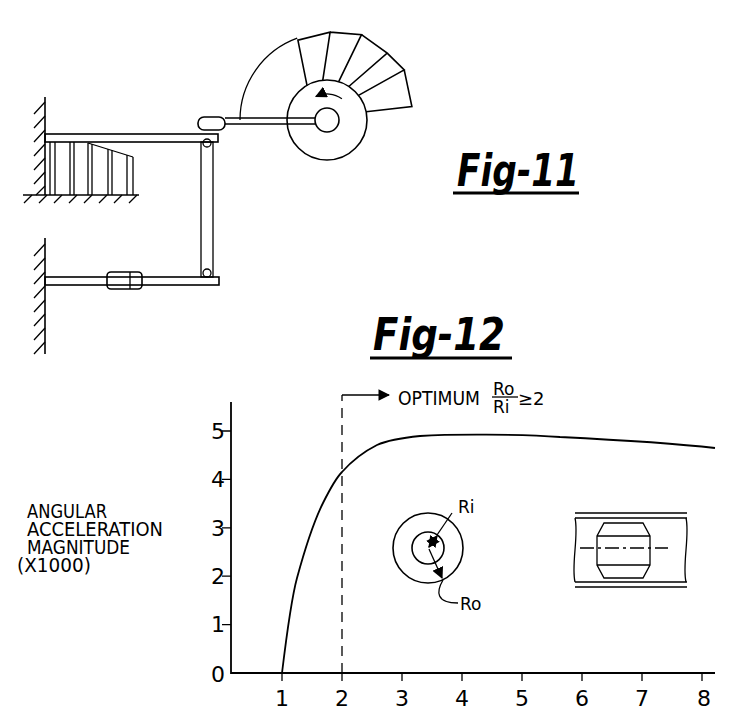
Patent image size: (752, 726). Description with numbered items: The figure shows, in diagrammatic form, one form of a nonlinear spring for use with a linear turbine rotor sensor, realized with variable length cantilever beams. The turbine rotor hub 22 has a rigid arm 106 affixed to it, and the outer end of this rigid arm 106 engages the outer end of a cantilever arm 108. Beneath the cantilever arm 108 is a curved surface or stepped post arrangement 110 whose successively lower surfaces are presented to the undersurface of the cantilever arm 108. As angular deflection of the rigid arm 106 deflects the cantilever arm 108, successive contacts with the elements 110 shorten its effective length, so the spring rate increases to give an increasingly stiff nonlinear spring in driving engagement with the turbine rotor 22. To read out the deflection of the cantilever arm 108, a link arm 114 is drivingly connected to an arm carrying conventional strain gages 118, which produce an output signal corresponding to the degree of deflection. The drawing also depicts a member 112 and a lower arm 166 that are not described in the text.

The turbine rotor hub 22 is at (338, 164).
The rigid arm 106 is at (242, 116).
The cantilever arm 108 is at (223, 132).
The stepped post arrangement 110 is at (136, 172).
The upper arm 112 is at (163, 146).
The link arm 114 is at (210, 248).
The strain gages 118 is at (137, 289).
The lower arm 166 is at (198, 286).